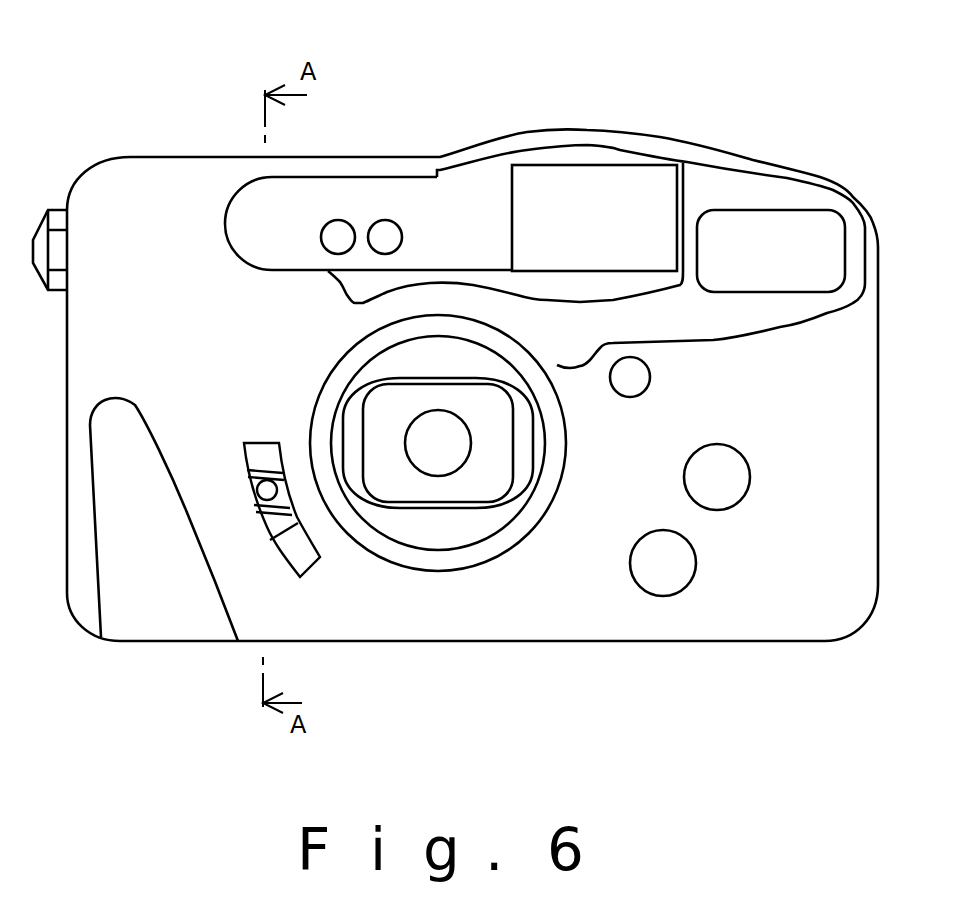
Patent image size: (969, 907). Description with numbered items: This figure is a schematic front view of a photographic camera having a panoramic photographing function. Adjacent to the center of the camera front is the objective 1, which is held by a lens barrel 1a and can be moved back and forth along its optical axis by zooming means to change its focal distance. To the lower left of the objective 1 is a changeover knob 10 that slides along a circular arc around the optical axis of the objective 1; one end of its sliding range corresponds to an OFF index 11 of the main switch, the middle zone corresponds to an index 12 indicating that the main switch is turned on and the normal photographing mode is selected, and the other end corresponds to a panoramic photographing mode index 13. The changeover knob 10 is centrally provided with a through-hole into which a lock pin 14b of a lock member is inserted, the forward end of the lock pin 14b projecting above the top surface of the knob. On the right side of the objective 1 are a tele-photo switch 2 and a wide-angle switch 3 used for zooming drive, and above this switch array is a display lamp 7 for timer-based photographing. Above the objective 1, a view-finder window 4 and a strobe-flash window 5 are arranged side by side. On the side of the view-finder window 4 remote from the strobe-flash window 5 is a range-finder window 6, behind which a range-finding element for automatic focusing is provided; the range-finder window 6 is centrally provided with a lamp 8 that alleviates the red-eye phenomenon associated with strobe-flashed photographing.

The objective 1 is at (443, 463).
The lens barrel 1a is at (497, 517).
The tele-photo switch 2 is at (737, 490).
The wide-angle switch 3 is at (687, 567).
The view-finder window 4 is at (587, 173).
The strobe-flash window 5 is at (780, 222).
The range-finder window 6 is at (340, 187).
The display lamp 7 is at (647, 373).
The lamp 8 is at (383, 223).
The changeover knob 10 is at (322, 538).
The OFF index 11 is at (218, 497).
The ON index 12 is at (225, 537).
The panoramic photographing mode index 13 is at (263, 567).
The lock pin 14b is at (287, 477).